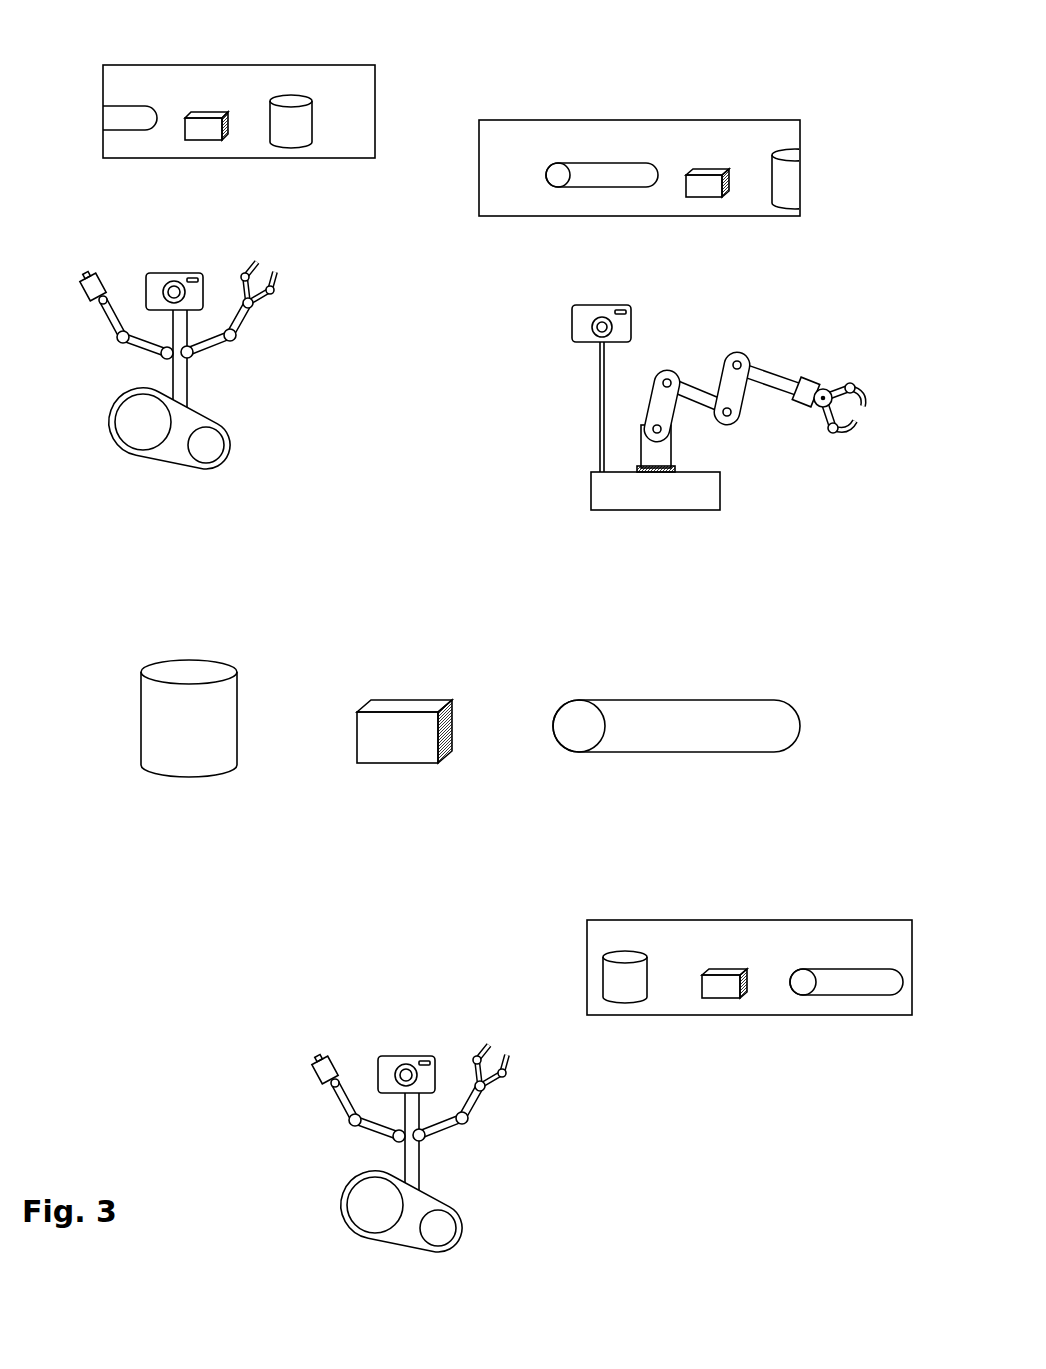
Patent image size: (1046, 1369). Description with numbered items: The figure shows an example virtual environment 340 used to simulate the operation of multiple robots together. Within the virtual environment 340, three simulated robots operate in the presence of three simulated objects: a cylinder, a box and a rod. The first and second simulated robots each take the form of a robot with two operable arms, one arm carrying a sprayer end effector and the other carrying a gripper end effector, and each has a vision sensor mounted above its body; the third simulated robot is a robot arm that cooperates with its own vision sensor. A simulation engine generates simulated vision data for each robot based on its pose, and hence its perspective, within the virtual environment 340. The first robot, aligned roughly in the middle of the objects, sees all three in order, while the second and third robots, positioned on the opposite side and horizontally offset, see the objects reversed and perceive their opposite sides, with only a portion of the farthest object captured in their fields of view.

The virtual environment 340 is at (80, 590).